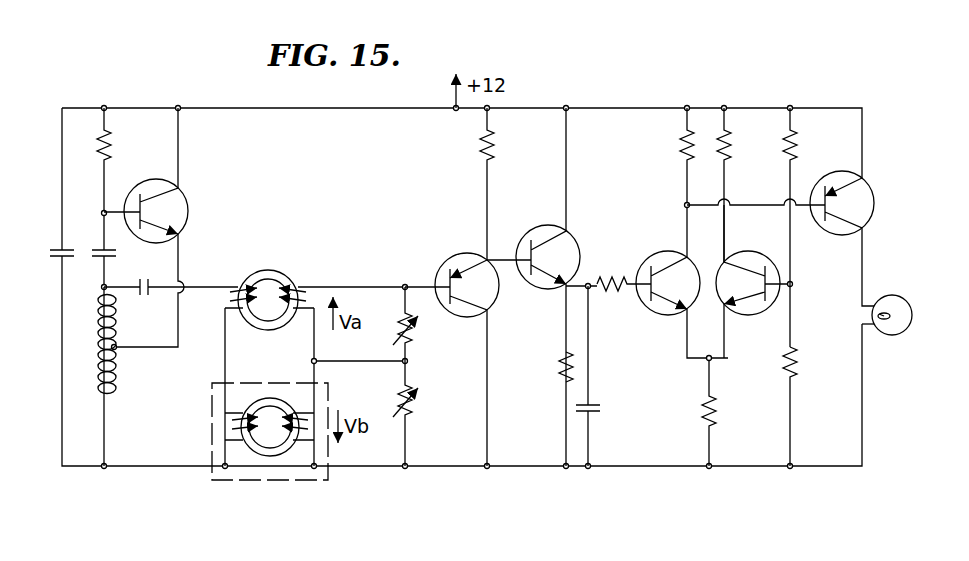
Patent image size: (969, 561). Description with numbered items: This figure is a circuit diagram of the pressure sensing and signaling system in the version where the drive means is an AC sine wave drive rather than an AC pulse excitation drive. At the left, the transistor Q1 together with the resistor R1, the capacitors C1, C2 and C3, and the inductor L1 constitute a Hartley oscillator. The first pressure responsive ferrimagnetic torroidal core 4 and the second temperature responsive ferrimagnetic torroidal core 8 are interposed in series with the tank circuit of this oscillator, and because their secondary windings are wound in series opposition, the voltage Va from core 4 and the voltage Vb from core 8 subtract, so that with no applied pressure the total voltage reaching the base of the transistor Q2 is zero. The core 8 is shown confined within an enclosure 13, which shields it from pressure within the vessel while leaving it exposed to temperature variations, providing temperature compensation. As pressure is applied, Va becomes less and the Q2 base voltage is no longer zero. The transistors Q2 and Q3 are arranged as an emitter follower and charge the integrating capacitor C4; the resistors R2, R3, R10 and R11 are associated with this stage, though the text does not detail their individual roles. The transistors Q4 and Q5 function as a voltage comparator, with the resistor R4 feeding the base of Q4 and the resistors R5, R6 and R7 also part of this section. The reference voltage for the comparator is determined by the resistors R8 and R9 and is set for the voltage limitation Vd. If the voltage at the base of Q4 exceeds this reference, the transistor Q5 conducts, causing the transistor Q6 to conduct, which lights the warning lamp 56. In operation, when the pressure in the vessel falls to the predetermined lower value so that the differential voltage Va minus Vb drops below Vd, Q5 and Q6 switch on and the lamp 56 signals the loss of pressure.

The resistor R1 is at (111, 157).
The capacitor C1 is at (99, 256).
The capacitor C3 is at (60, 250).
The transistor Q1 is at (184, 198).
The capacitor C2 is at (150, 292).
The inductor L1 is at (114, 366).
The first pressure responsive ferrimagnetic torroidal core 4 is at (276, 272).
The second temperature responsive ferrimagnetic torroidal core 8 is at (281, 455).
The enclosure 13 is at (266, 482).
The resistor R10 is at (414, 336).
The resistor R11 is at (414, 412).
The resistor R2 is at (474, 150).
The transistor Q2 is at (459, 253).
The transistor Q3 is at (540, 226).
The resistor R3 is at (559, 370).
The integrating capacitor C4 is at (598, 412).
The resistor R4 is at (622, 278).
The transistor Q4 is at (658, 315).
The transistor Q5 is at (745, 253).
The resistor R5 is at (718, 421).
The resistor R6 is at (680, 156).
The resistor R7 is at (727, 162).
The resistor R9 is at (797, 153).
The resistor R8 is at (797, 379).
The transistor Q6 is at (872, 197).
The warning lamp 56 is at (893, 296).